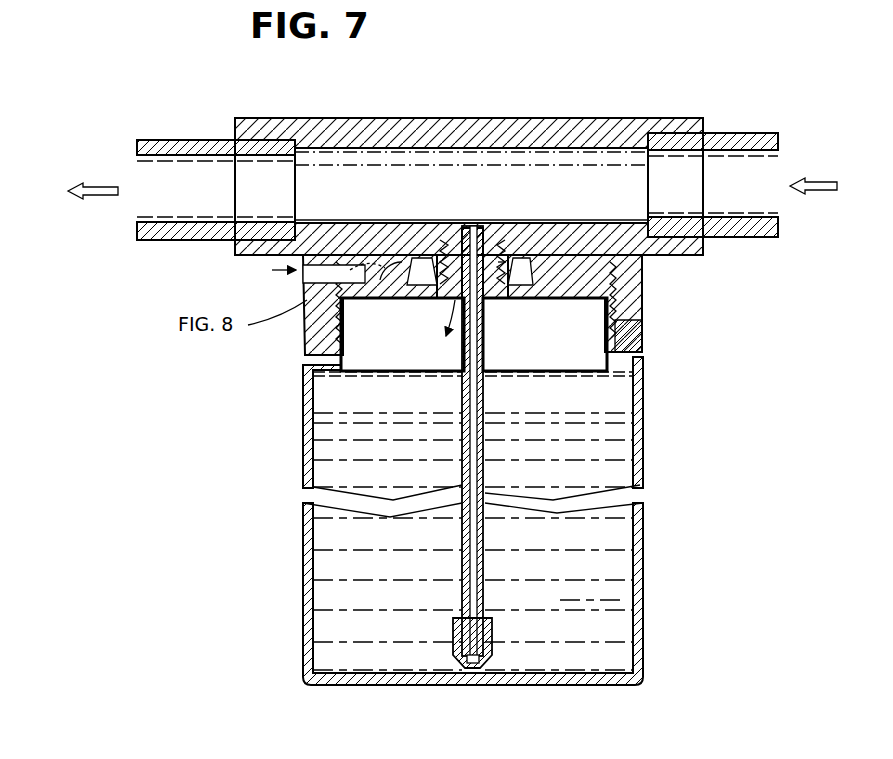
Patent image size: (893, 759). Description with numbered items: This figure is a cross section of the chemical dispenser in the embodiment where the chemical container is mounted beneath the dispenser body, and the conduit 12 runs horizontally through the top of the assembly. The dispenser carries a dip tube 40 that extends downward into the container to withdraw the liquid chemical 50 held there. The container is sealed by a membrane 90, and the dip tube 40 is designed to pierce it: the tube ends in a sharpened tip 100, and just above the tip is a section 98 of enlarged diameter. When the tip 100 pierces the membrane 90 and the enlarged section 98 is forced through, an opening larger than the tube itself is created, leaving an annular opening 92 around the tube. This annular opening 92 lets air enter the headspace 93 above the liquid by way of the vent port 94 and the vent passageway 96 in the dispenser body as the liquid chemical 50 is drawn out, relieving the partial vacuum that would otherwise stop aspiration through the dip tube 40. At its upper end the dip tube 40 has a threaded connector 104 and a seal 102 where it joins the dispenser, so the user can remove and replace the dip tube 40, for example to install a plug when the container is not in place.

The conduit 12 is at (737, 133).
The vent passageway 96 is at (330, 272).
The threaded connector 104 is at (507, 262).
The vent port 94 is at (305, 276).
The membrane 90 is at (598, 321).
The headspace 93 is at (402, 364).
The annular opening 92 is at (494, 308).
The seal 102 is at (440, 283).
The dip tube 40 is at (560, 392).
The liquid chemical 50 is at (566, 574).
The section of enlarged diameter 98 is at (641, 611).
The sharpened tip 100 is at (470, 668).